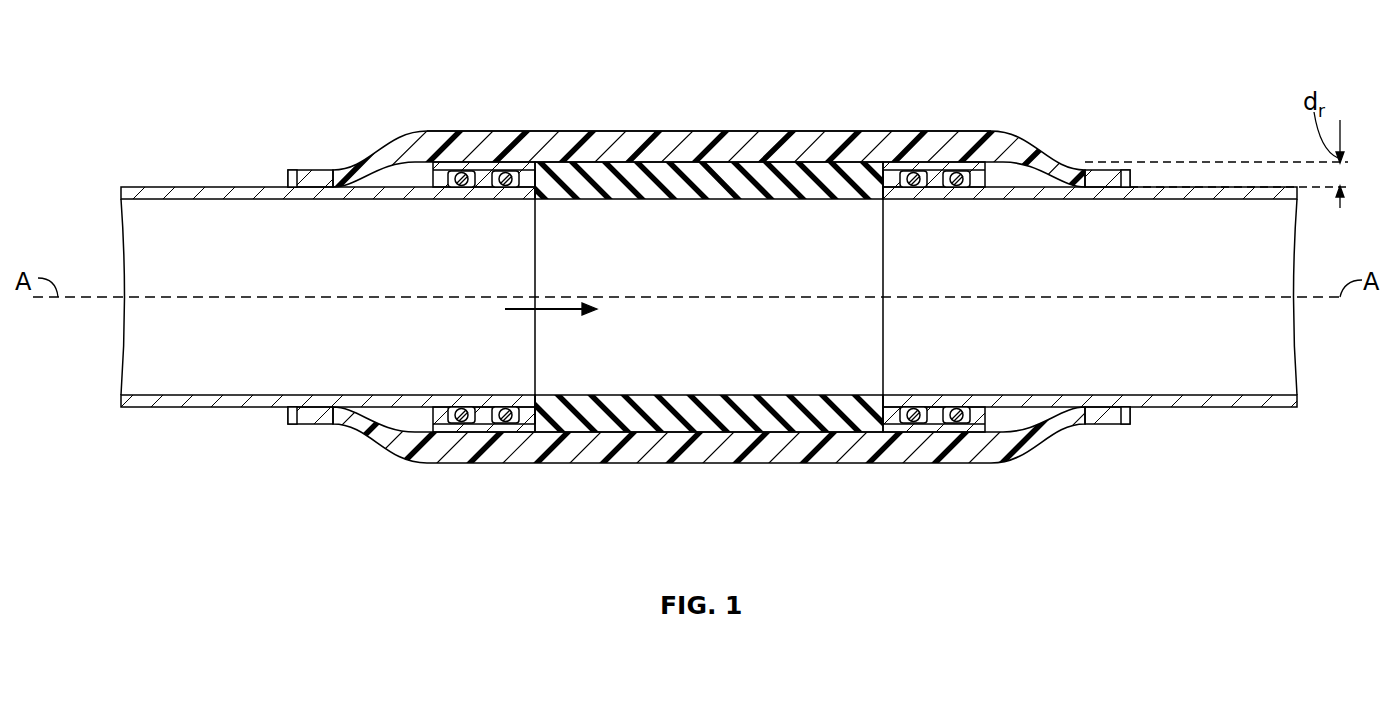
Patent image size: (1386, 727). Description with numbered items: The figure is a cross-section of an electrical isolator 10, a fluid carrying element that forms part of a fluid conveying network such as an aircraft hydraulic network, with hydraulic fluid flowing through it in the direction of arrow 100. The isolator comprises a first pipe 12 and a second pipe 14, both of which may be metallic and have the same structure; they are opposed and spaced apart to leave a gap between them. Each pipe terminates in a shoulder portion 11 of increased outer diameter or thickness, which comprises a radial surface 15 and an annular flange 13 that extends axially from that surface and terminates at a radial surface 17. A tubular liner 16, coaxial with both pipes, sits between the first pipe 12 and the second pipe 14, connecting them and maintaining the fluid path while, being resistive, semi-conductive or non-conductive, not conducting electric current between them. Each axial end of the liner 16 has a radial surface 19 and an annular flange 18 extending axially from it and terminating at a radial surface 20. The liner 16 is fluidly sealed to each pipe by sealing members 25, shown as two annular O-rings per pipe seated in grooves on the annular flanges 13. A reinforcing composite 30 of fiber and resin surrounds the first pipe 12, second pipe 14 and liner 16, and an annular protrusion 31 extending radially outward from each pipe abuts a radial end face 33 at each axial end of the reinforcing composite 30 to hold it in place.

The electrical isolator 10 is at (1274, 32).
The shoulder portion 11 is at (417, 405).
The first pipe 12 is at (178, 187).
The annular flange 13 is at (486, 404).
The second pipe 14 is at (1195, 187).
The radial surface 15 is at (435, 427).
The liner 16 is at (700, 418).
The radial surface 17 is at (537, 410).
The annular flange 18 is at (447, 176).
The radial surface 19 is at (530, 176).
The radial surface 20 is at (417, 166).
The sealing member 25 is at (462, 172).
The reinforcing composite 30 is at (430, 130).
The annular protrusion 31 is at (1133, 182).
The radial end face 33 is at (313, 170).
The arrow 100 is at (560, 311).